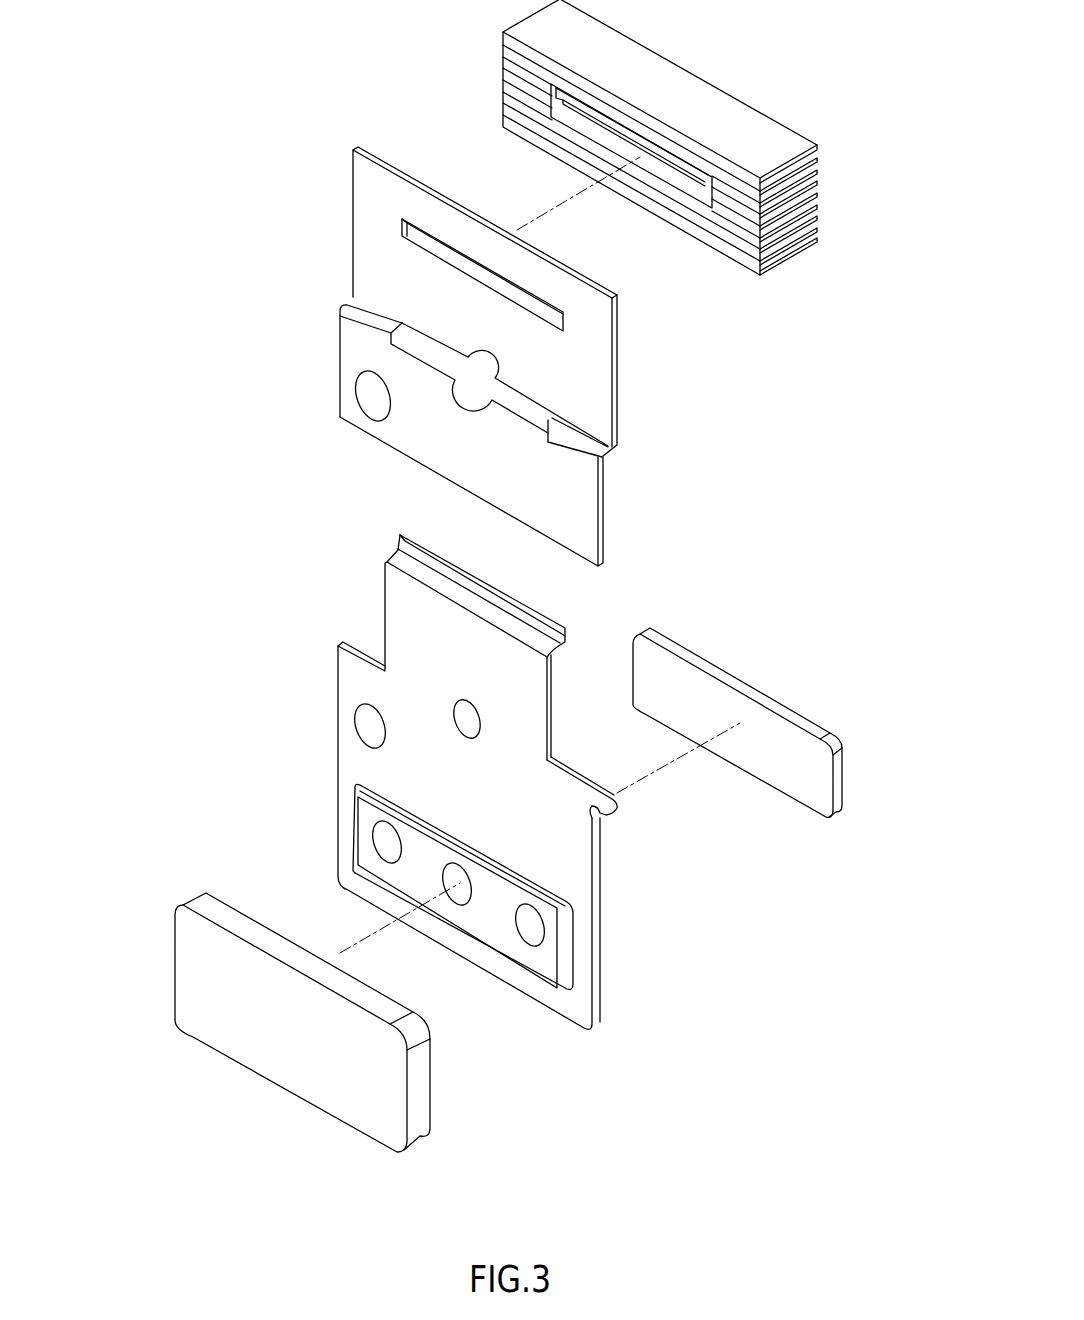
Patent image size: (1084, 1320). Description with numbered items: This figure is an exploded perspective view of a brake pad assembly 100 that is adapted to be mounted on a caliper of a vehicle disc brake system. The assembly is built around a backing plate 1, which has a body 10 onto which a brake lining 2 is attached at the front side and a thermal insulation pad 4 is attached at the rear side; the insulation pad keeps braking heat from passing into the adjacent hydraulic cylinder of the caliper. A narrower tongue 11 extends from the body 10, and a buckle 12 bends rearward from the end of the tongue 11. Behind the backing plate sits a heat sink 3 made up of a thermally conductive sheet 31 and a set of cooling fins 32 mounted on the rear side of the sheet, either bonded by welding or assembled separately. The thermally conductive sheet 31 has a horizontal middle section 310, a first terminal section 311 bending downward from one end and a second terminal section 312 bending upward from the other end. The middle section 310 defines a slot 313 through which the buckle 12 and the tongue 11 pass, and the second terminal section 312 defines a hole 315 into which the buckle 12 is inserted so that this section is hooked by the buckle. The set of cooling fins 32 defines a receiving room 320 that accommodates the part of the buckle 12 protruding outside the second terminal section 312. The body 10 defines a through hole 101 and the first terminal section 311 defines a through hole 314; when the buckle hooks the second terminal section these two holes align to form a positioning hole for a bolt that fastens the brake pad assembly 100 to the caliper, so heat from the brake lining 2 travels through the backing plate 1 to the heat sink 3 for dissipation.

The brake pad assembly 100 is at (243, 133).
The backing plate 1 is at (613, 940).
The body 10 is at (335, 810).
The through hole 101 is at (372, 728).
The tongue 11 is at (385, 615).
The buckle 12 is at (405, 557).
The brake lining 2 is at (280, 1062).
The heat sink 3 is at (772, 338).
The thermally conductive sheet 31 is at (743, 382).
The middle section 310 is at (607, 448).
The first terminal section 311 is at (605, 513).
The second terminal section 312 is at (618, 368).
The slot 313 is at (428, 354).
The through hole 314 is at (377, 393).
The hole 315 is at (437, 245).
The set of cooling fins 32 is at (773, 118).
The receiving room 320 is at (583, 123).
The thermal insulation pad 4 is at (800, 722).